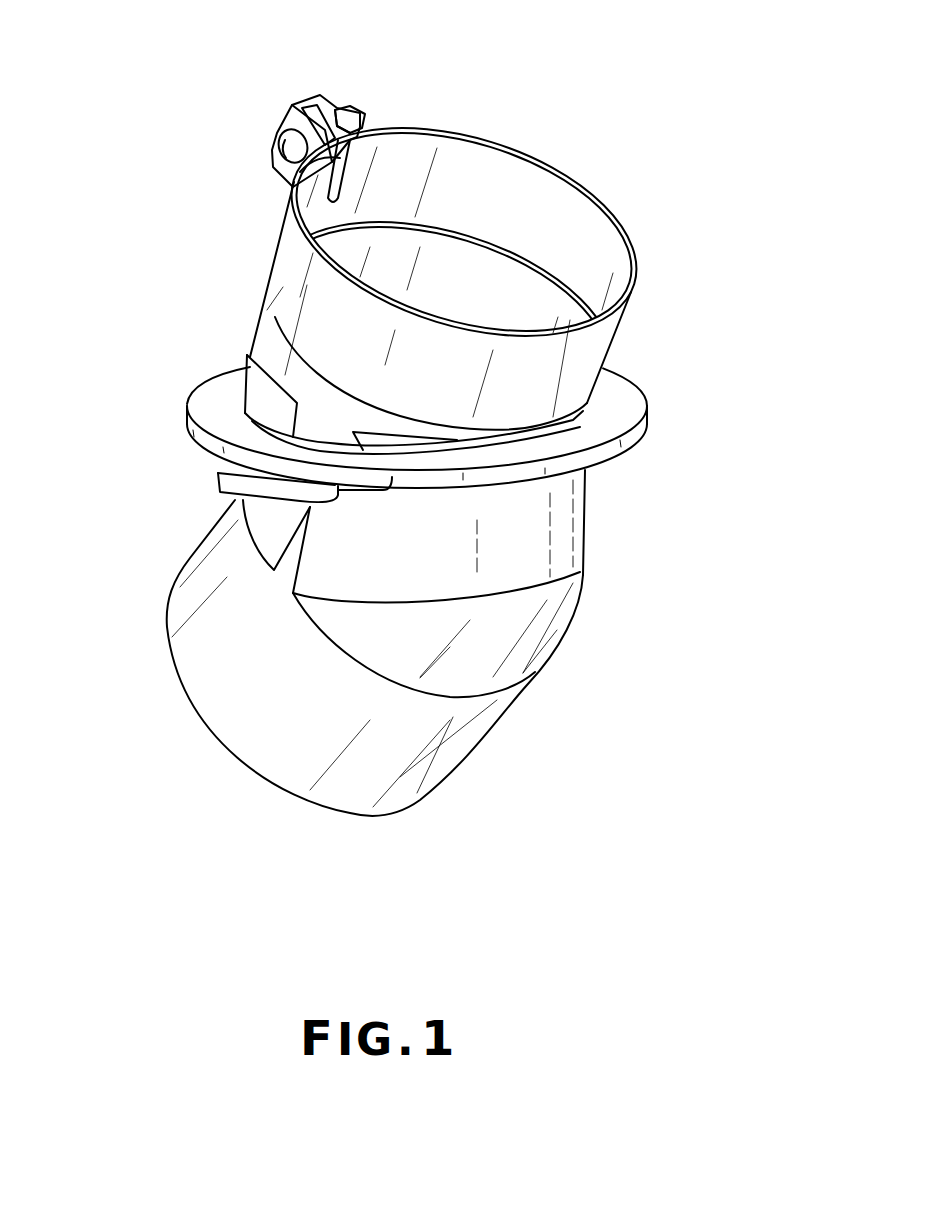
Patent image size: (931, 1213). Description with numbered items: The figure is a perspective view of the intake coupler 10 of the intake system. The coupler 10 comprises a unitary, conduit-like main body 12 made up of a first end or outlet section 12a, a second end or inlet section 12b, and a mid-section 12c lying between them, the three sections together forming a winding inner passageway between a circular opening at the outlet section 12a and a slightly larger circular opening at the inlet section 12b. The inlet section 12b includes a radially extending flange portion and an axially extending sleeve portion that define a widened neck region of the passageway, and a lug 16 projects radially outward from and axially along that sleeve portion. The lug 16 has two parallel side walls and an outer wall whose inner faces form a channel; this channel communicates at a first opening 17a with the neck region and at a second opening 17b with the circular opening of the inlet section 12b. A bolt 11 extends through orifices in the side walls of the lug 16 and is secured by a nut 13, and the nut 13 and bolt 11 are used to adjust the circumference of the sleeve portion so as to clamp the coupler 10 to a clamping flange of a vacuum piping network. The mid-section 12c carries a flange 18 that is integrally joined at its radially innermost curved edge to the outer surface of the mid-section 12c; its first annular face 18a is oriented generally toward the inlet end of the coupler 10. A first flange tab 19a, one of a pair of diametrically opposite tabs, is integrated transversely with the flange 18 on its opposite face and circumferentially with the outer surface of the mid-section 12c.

The intake coupler 10 is at (700, 303).
The bolt 11 is at (275, 158).
The main body 12 is at (640, 497).
The first end (outlet) section 12a is at (442, 738).
The second end (inlet) section 12b is at (267, 338).
The mid-section 12c is at (568, 543).
The nut 13 is at (350, 110).
The lug 16 is at (250, 136).
The first opening 17a is at (352, 165).
The second opening 17b is at (333, 110).
The flange 18 is at (170, 425).
The first annular face 18a is at (623, 402).
The first flange tab 19a is at (203, 506).